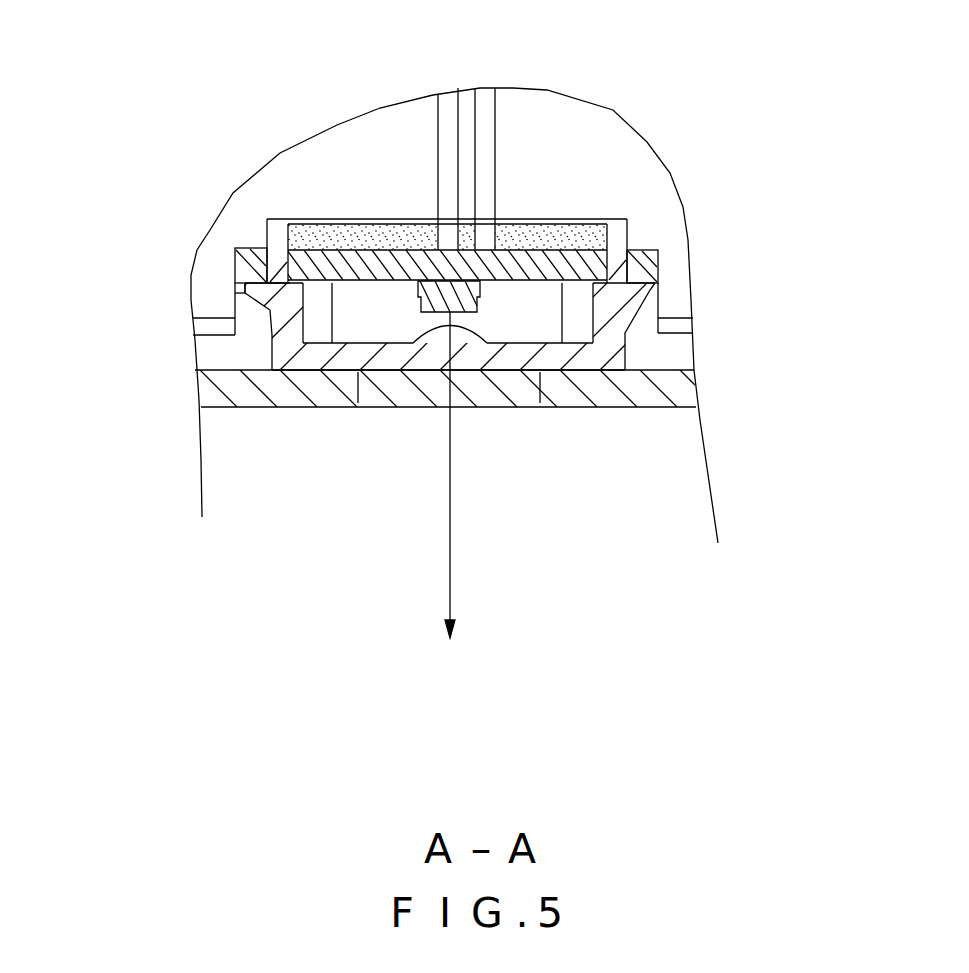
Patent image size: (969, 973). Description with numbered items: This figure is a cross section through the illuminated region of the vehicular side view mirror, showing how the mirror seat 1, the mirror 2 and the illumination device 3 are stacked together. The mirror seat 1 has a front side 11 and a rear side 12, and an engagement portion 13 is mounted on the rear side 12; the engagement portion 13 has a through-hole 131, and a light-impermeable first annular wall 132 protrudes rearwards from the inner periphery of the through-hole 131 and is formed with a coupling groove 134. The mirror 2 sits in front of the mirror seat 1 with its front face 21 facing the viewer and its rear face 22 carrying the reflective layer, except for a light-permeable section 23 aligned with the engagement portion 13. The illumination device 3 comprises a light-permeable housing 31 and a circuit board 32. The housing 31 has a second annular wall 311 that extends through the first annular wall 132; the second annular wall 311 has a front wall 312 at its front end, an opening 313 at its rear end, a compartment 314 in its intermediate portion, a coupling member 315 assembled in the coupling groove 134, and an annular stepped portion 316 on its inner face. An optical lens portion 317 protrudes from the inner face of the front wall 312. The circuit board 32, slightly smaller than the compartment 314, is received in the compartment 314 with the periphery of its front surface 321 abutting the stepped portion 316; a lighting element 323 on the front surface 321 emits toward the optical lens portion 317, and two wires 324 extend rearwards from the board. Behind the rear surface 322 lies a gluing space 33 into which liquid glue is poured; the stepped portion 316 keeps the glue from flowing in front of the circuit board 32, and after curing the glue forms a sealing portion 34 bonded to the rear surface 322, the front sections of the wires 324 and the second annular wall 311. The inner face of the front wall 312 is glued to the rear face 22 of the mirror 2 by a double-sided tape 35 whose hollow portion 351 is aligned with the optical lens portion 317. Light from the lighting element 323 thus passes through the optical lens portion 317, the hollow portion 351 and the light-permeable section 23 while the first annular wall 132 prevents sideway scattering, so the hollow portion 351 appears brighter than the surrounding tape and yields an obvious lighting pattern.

The mirror seat 1 is at (663, 257).
The front side 11 is at (697, 383).
The rear side 12 is at (695, 325).
The engagement portion 13 is at (225, 363).
The through-hole 131 is at (255, 346).
The first annular wall 132 is at (245, 262).
The coupling groove 134 is at (243, 288).
The mirror 2 is at (633, 445).
The front face 21 is at (330, 425).
The rear face 22 is at (663, 370).
The light-permeable section 23 is at (508, 393).
The illumination device 3 is at (575, 213).
The housing 31 is at (290, 360).
The second annular wall 311 is at (262, 260).
The front wall 312 is at (325, 355).
The opening 313 is at (547, 219).
The compartment 314 is at (548, 312).
The coupling member 315 is at (243, 297).
The annular stepped portion 316 is at (640, 256).
The optical lens portion 317 is at (455, 345).
The circuit board 32 is at (280, 263).
The front surface 321 is at (378, 285).
The rear surface 322 is at (322, 268).
The lighting element 323 is at (428, 300).
The wires 324 is at (445, 145).
The gluing space 33 is at (338, 262).
The sealing portion 34 is at (367, 242).
The double-sided tape 35 is at (322, 360).
The hollow portion 351 is at (438, 372).